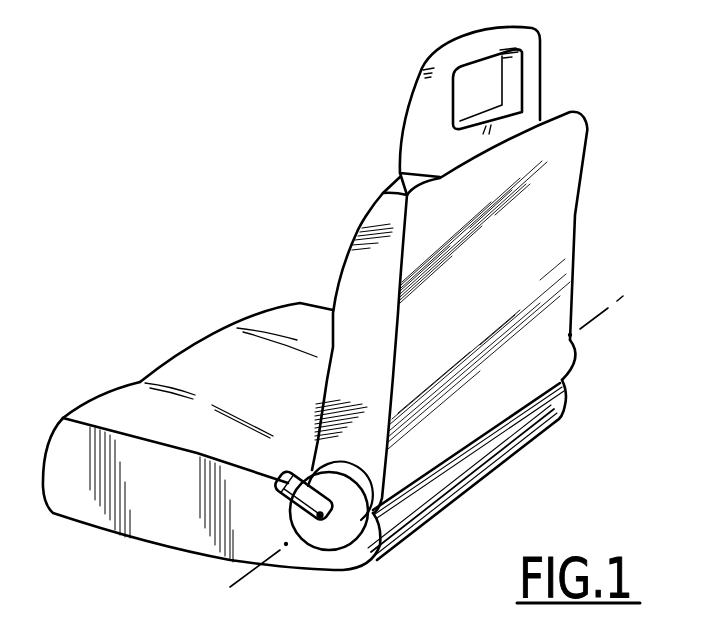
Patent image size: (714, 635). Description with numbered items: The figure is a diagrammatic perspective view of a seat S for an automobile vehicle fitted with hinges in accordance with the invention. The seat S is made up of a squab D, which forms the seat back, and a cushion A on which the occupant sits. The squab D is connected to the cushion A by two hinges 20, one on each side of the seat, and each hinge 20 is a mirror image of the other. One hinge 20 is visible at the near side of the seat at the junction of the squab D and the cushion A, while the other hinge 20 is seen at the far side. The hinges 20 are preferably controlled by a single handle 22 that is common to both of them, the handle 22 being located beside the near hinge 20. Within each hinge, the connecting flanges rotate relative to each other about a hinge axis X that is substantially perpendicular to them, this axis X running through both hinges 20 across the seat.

The seat S is at (598, 95).
The cushion A is at (183, 357).
The squab D is at (530, 273).
The hinge 20 is at (577, 380).
The handle 22 is at (282, 492).
The hinge axis X is at (255, 563).